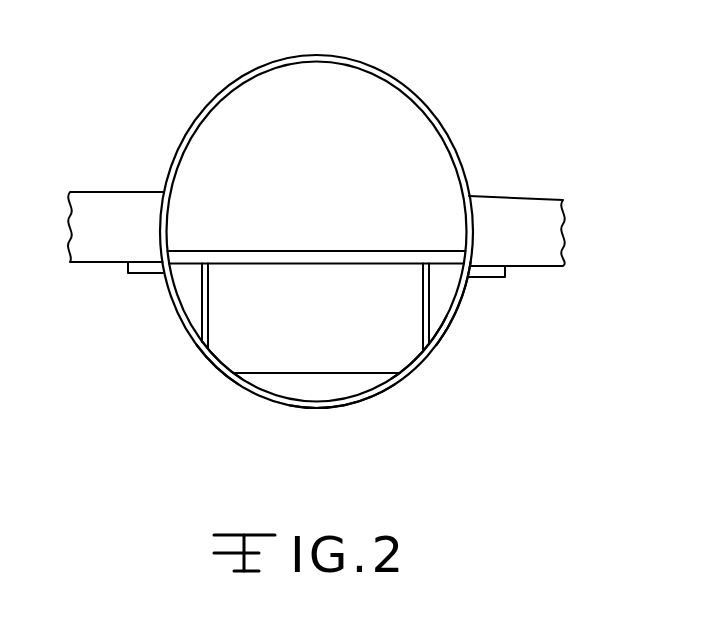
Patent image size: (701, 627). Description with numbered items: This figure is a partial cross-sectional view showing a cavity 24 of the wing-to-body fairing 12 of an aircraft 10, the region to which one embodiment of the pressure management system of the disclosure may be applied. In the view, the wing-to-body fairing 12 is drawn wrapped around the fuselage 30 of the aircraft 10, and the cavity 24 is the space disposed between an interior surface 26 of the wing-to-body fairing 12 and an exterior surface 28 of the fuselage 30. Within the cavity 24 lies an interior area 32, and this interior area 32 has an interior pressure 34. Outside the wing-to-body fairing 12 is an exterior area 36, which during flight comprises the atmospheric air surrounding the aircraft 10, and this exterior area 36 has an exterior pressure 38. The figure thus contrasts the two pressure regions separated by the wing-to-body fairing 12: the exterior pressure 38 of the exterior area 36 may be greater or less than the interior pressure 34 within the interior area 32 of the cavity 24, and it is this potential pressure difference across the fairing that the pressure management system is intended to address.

The aircraft 10 is at (518, 82).
The wing-to-body fairing 12 is at (315, 409).
The cavity 24 is at (412, 373).
The interior surface 26 is at (216, 368).
The exterior surface 28 is at (218, 372).
The fuselage 30 is at (236, 372).
The interior area 32 is at (440, 347).
The interior pressure 34 is at (465, 308).
The exterior area 36 is at (357, 428).
The exterior pressure 38 is at (377, 413).